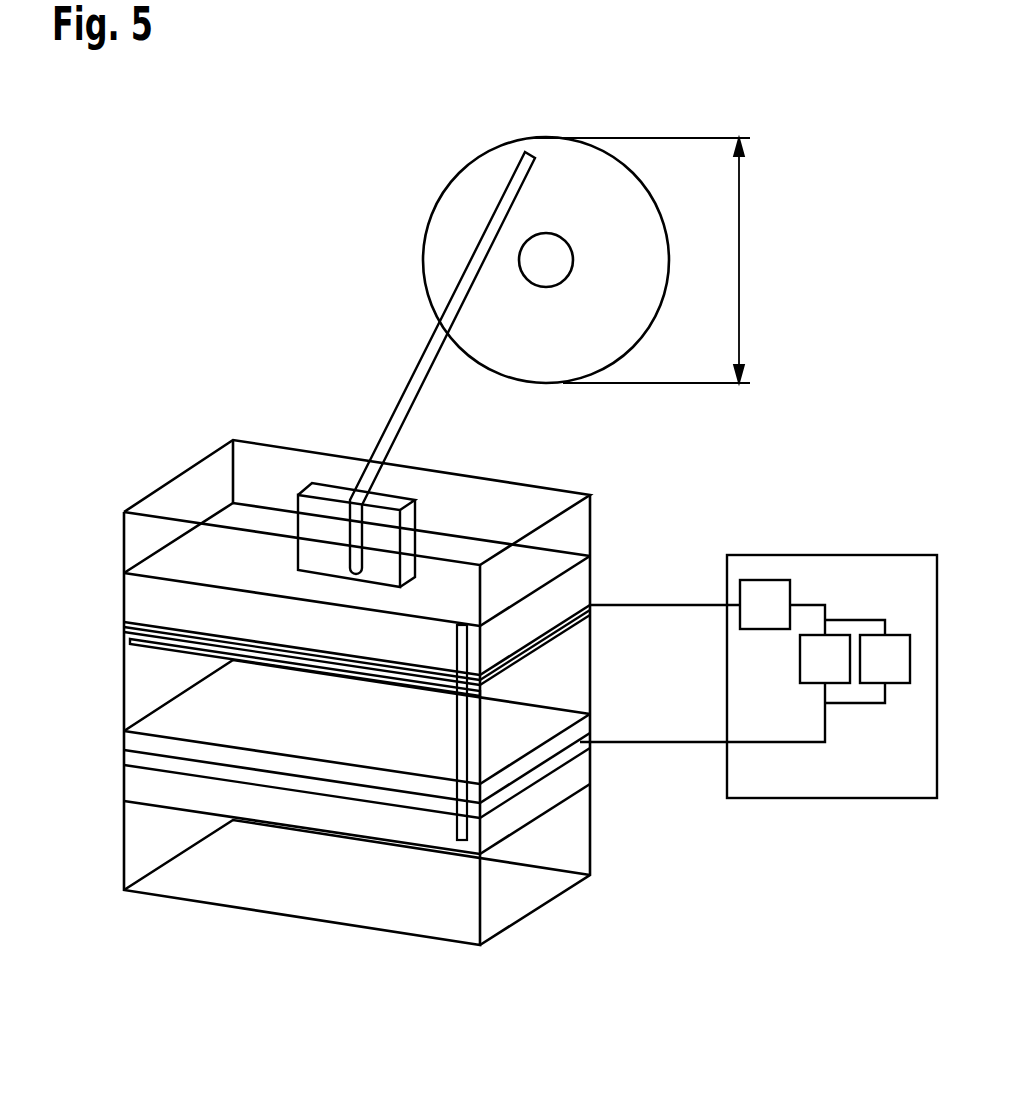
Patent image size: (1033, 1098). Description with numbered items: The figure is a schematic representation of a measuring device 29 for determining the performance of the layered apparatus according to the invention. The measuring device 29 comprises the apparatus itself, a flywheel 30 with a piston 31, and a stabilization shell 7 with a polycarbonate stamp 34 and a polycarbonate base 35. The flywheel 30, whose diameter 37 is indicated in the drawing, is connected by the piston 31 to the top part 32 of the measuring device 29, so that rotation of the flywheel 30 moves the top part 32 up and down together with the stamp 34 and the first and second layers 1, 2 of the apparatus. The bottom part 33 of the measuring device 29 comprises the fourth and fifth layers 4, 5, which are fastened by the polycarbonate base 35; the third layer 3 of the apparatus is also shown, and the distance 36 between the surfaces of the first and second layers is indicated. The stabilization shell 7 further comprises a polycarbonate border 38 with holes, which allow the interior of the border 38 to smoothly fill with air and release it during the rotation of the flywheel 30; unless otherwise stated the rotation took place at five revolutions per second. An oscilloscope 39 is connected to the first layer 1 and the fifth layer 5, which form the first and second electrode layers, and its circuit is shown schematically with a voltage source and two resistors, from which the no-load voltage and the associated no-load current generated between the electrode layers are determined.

The measuring device 29 is at (180, 222).
The flywheel 30 is at (425, 240).
The piston 31 is at (406, 384).
The diameter of the flywheel 37 is at (752, 245).
The stabilization shell 7 is at (153, 491).
The polycarbonate stamp 34 is at (145, 600).
The first layer 1 is at (130, 623).
The second layer 2 is at (130, 631).
The third layer 3 is at (158, 649).
The fourth layer 4 is at (138, 740).
The fifth layer 5 is at (138, 757).
The polycarbonate base 35 is at (165, 797).
The top part of the measuring device 32 is at (603, 495).
The distance between the surfaces of the first and second layer 36 is at (603, 617).
The bottom part of the measuring device 33 is at (603, 743).
The polycarbonate border 38 is at (432, 752).
The oscilloscope 39 is at (843, 826).